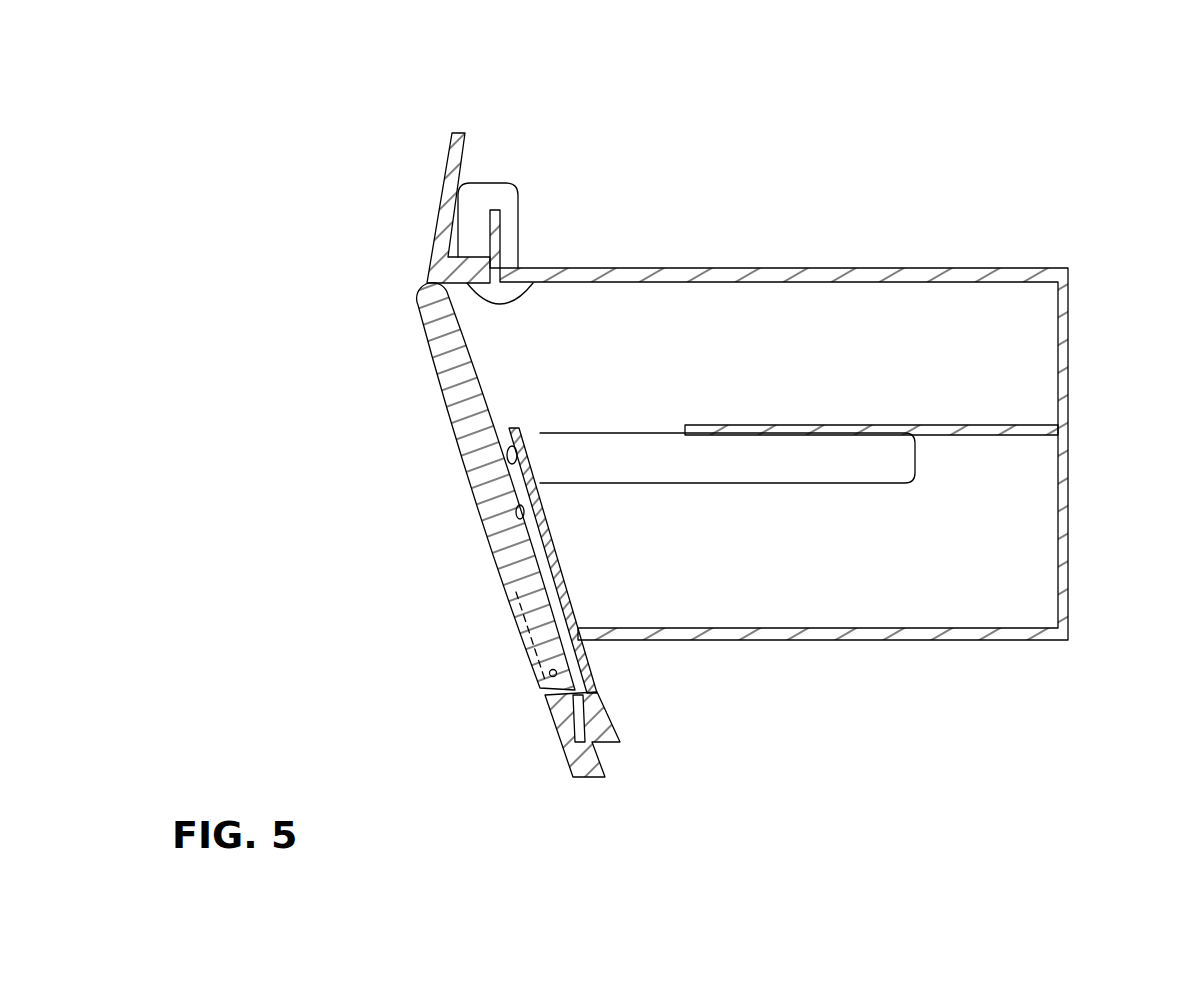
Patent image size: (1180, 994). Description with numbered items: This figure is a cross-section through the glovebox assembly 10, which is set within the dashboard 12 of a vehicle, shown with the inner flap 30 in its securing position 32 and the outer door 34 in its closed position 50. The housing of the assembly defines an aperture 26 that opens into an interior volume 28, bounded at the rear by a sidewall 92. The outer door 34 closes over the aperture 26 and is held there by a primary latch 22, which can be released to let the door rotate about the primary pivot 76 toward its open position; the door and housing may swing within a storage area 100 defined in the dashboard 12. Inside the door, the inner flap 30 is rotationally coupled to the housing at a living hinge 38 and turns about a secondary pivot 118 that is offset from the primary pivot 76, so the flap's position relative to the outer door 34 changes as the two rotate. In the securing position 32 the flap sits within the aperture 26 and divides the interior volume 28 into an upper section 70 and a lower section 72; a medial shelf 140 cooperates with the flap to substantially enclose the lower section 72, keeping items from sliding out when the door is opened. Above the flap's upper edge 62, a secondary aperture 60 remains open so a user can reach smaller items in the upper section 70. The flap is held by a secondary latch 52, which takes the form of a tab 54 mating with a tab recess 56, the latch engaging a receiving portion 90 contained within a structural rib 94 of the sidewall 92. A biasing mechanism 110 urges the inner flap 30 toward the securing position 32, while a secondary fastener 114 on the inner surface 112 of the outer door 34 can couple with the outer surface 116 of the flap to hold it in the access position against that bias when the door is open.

The glovebox assembly 10 is at (875, 235).
The dashboard 12 is at (425, 188).
The primary latch 22 is at (430, 398).
The aperture 26 is at (435, 330).
The interior volume 28 is at (1030, 305).
The inner flap 30 is at (485, 590).
The securing position 32 is at (568, 565).
The outer door 34 is at (485, 505).
The living hinge 38 is at (573, 613).
The closed position 50 is at (515, 638).
The secondary latch 52 is at (520, 428).
The tab 54 is at (545, 455).
The tab recess 56 is at (540, 445).
The secondary aperture 60 is at (530, 284).
The upper edge 62 is at (500, 432).
The upper section 70 is at (765, 315).
The lower section 72 is at (848, 600).
The primary pivot 76 is at (553, 680).
The receiving portion 90 is at (565, 450).
The sidewall 92 is at (975, 376).
The structural rib 94 is at (825, 463).
The storage area 100 is at (497, 168).
The biasing mechanism 110 is at (538, 606).
The inner surface 112 is at (462, 355).
The secondary fastener 114 is at (505, 462).
The outer surface 116 is at (485, 480).
The secondary pivot 118 is at (580, 617).
The medial shelf 140 is at (1000, 428).